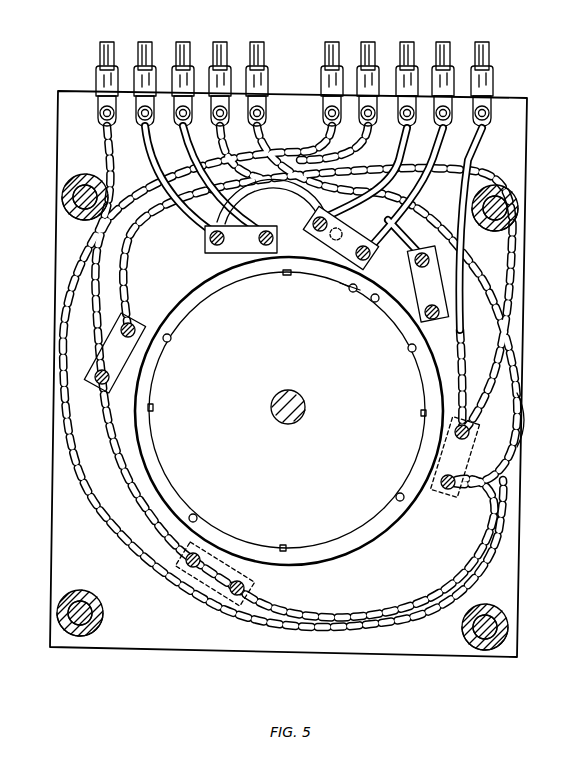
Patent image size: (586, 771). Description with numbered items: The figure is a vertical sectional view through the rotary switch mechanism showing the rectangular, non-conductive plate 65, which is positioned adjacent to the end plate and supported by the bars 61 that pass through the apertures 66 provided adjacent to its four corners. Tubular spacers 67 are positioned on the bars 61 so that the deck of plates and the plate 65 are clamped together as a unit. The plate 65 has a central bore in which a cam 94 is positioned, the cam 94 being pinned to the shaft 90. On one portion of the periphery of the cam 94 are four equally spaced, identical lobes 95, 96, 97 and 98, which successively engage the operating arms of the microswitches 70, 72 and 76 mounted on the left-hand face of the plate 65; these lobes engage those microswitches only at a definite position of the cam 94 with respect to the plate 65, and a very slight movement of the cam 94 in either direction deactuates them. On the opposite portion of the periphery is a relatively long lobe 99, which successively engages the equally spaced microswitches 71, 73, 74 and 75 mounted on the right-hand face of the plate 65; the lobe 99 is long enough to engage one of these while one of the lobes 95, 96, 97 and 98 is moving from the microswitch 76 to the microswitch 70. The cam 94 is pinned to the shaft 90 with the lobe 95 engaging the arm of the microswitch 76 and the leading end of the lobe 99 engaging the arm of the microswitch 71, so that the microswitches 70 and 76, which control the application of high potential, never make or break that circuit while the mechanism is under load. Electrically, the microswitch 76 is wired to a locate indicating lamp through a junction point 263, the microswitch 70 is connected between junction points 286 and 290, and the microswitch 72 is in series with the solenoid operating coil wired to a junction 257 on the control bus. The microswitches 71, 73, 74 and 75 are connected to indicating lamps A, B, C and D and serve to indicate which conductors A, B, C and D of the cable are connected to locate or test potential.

The plate 65 is at (68, 508).
The apertures 66 is at (90, 190).
The bars 61 is at (72, 193).
The tubular spacers 67 is at (76, 212).
The junction 257 is at (133, 95).
The junction point 263 is at (170, 98).
The junction point 286 is at (396, 98).
The junction point 290 is at (430, 98).
The conductor A is at (245, 98).
The conductor B is at (320, 98).
The conductor C is at (357, 98).
The conductor D is at (208, 98).
The cam 94 is at (200, 318).
The shaft 90 is at (303, 402).
The lobe 95 is at (288, 276).
The lobe 96 is at (154, 408).
The lobe 97 is at (284, 545).
The lobe 98 is at (420, 415).
The lobe 99 is at (352, 279).
The microswitch 70 is at (318, 232).
The microswitch 71 is at (372, 272).
The microswitch 72 is at (432, 322).
The microswitch 73 is at (443, 492).
The microswitch 74 is at (246, 584).
The microswitch 75 is at (115, 388).
The microswitch 76 is at (212, 252).